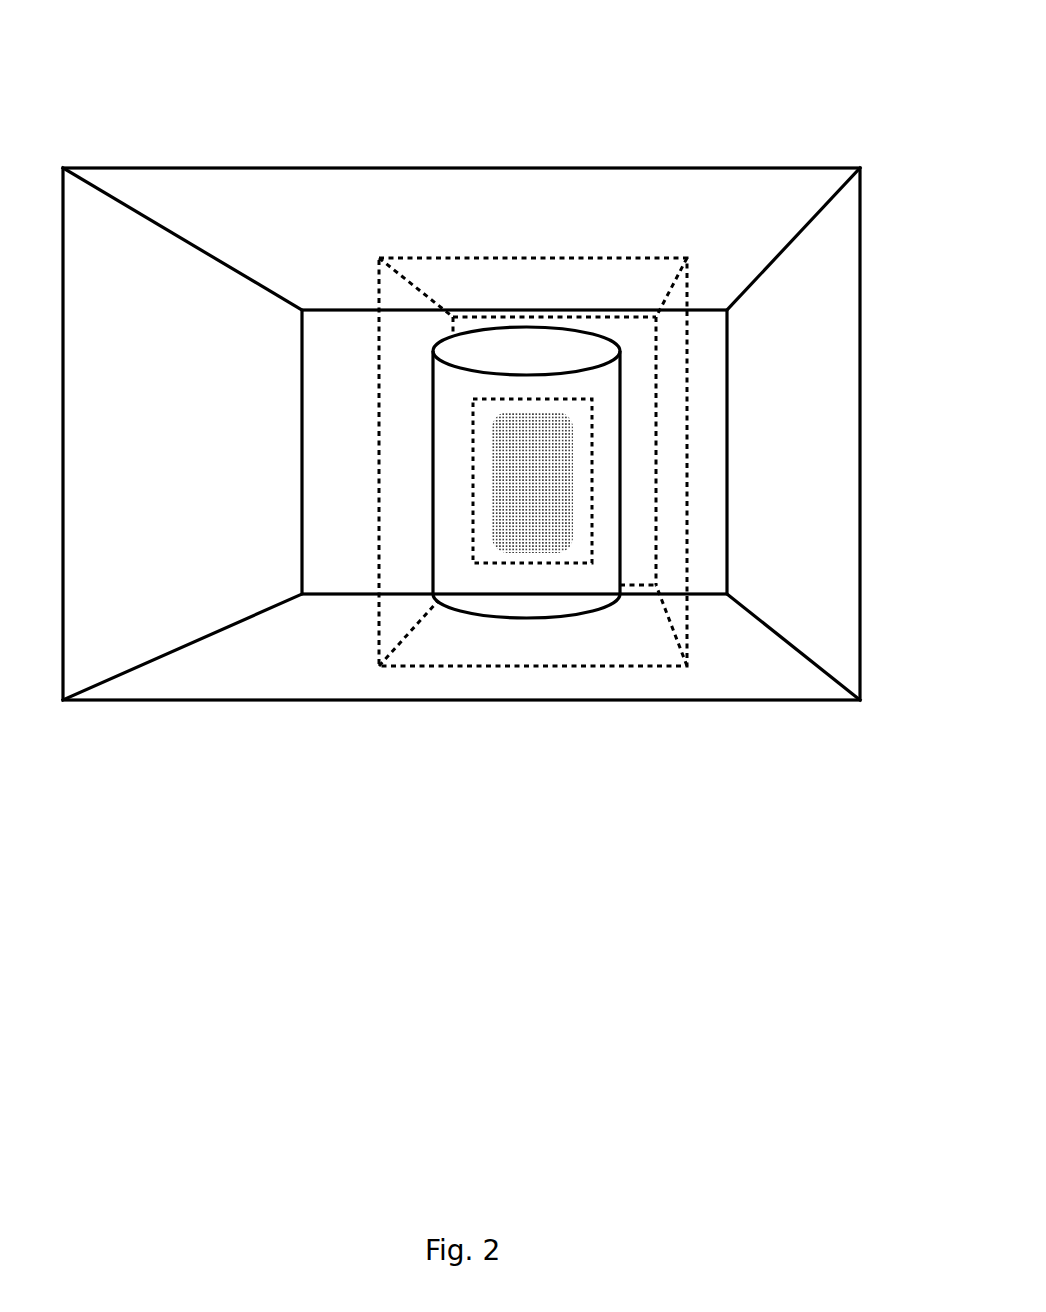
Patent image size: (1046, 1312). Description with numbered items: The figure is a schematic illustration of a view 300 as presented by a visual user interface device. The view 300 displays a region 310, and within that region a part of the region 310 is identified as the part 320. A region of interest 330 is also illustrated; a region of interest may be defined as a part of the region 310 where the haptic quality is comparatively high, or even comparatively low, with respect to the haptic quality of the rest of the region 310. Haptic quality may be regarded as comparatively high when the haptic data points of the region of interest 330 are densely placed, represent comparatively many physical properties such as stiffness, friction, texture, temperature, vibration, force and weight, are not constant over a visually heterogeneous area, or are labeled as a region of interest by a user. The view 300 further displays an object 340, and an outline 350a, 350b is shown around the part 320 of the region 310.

The view 300 is at (719, 86).
The region 310 is at (259, 227).
The part of the region 320 is at (443, 462).
The region of interest 330 is at (492, 488).
The object 340 is at (618, 482).
The outline 350a is at (379, 363).
The outline 350b is at (473, 423).